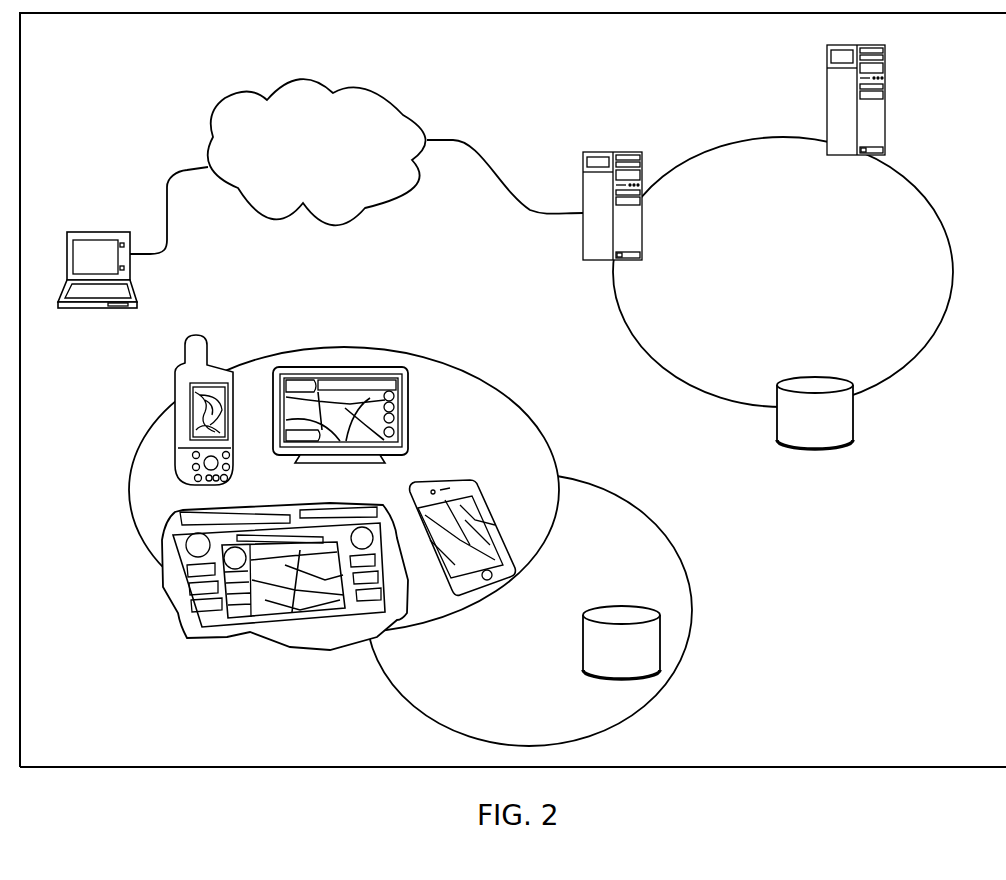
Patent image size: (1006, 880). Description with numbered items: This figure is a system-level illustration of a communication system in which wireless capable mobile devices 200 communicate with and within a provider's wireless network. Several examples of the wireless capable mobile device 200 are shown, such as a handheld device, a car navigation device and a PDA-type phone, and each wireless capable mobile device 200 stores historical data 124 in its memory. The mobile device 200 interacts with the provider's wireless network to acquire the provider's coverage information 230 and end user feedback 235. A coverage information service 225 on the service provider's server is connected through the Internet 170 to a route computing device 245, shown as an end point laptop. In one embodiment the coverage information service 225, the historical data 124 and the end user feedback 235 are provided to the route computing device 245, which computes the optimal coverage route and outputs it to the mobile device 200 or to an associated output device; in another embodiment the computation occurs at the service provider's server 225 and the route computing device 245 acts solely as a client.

The Internet 170 is at (233, 97).
The route computing device 245 is at (133, 284).
The coverage information service 225 is at (601, 152).
The provider's coverage information 230 is at (827, 77).
The end user feedback 235 is at (813, 375).
The wireless capable mobile device 200 is at (141, 455).
The historical data 124 is at (583, 638).